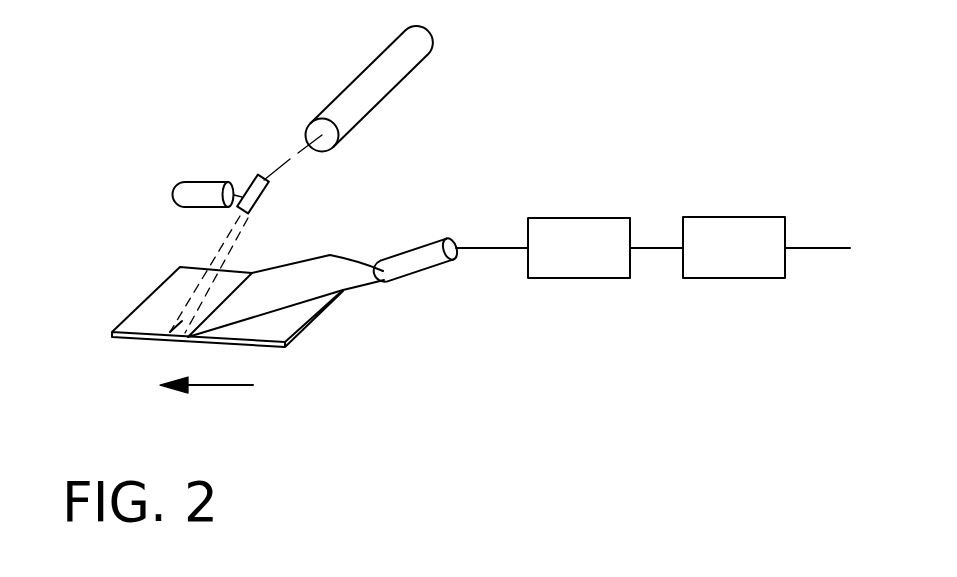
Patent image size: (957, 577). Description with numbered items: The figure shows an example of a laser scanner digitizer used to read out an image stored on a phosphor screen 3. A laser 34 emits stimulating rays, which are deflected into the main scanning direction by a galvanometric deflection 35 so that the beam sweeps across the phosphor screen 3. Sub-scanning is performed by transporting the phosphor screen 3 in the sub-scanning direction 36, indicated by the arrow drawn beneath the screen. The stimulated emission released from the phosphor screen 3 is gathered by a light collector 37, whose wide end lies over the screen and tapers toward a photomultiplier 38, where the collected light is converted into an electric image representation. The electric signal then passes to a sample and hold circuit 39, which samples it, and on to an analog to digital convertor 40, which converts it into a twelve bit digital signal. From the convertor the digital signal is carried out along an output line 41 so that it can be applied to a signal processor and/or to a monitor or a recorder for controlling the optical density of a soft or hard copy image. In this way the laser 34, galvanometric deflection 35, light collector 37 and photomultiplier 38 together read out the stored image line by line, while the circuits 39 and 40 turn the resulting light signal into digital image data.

The phosphor screen 3 is at (140, 315).
The laser 34 is at (358, 72).
The galvanometric deflection 35 is at (257, 177).
The sub-scanning direction 36 is at (206, 404).
The light collector 37 is at (341, 257).
The photomultiplier 38 is at (411, 249).
The sample and hold circuit 39 is at (600, 217).
The analog to digital convertor 40 is at (727, 217).
The output line 41 is at (808, 248).